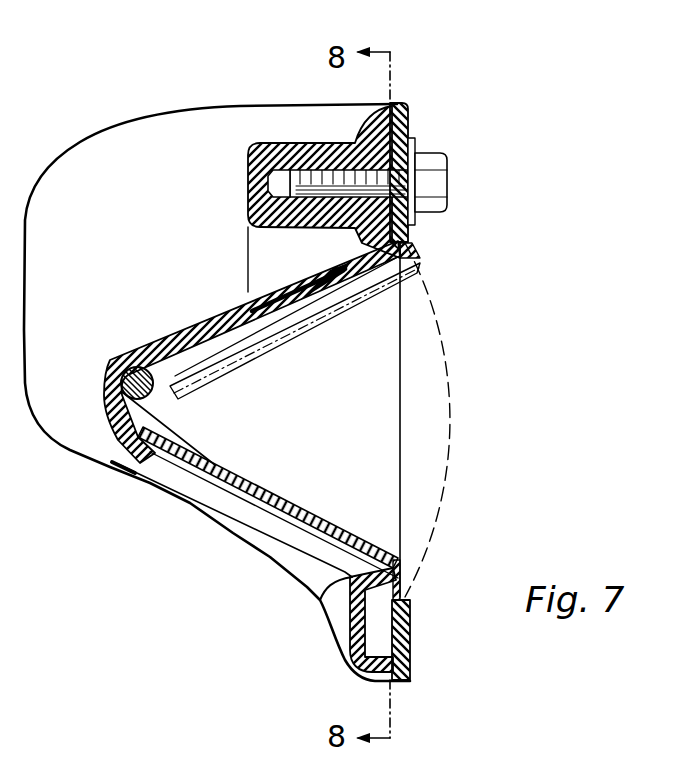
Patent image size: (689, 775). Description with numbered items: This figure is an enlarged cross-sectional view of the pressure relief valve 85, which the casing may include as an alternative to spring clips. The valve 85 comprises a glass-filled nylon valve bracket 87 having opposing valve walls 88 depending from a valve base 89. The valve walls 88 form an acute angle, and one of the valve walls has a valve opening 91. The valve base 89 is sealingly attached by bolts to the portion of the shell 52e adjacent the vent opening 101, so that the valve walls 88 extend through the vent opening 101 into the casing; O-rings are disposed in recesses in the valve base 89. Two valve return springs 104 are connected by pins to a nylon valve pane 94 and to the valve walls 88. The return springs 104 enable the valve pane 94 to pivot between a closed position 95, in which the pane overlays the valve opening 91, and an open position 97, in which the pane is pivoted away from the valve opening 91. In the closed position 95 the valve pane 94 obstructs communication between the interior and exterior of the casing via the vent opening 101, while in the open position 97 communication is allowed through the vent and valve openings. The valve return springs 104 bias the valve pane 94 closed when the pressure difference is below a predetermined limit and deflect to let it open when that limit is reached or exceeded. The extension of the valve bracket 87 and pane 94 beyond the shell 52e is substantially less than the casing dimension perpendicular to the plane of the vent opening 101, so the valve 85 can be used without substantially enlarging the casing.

The shell 52e is at (402, 125).
The pressure relief valve 85 is at (462, 395).
The valve bracket 87 is at (196, 331).
The valve walls 88 is at (272, 313).
The valve base 89 is at (342, 147).
The valve opening 91 is at (148, 484).
The valve pane 94 is at (267, 528).
The closed position 95 is at (322, 522).
The open position 97 is at (293, 328).
The vent opening 101 is at (406, 244).
The valve return springs 104 is at (173, 433).